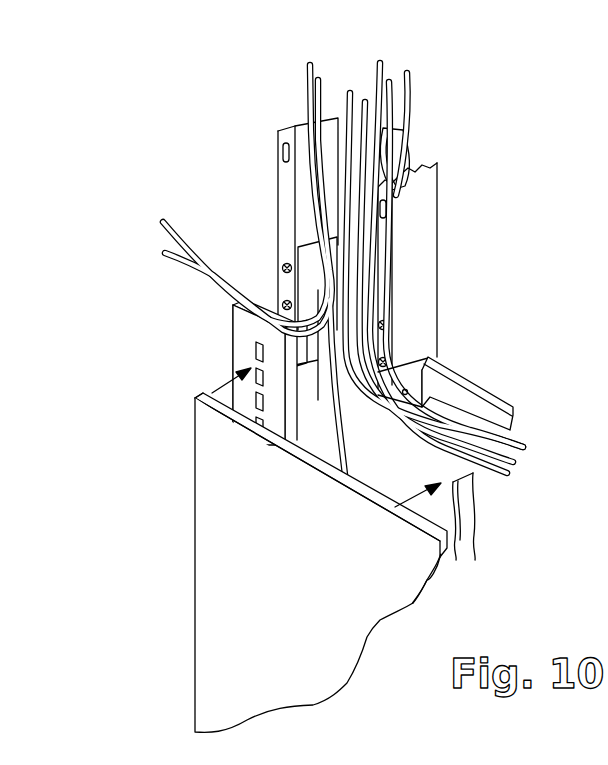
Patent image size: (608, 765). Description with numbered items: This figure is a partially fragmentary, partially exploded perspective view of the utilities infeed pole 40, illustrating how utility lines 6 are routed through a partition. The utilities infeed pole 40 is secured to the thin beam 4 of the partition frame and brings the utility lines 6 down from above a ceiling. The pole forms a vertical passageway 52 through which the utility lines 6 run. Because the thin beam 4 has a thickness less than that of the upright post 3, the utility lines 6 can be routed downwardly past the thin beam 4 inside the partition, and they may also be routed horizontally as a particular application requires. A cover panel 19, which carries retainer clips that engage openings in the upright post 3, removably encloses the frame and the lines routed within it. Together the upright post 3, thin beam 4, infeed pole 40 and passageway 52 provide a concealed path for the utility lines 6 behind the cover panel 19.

The upright post 3 is at (233, 352).
The thin beam 4 is at (480, 503).
The utility lines 6 is at (387, 117).
The cover panel 19 is at (468, 377).
The utilities infeed pole 40 is at (418, 220).
The vertical passageway 52 is at (393, 153).